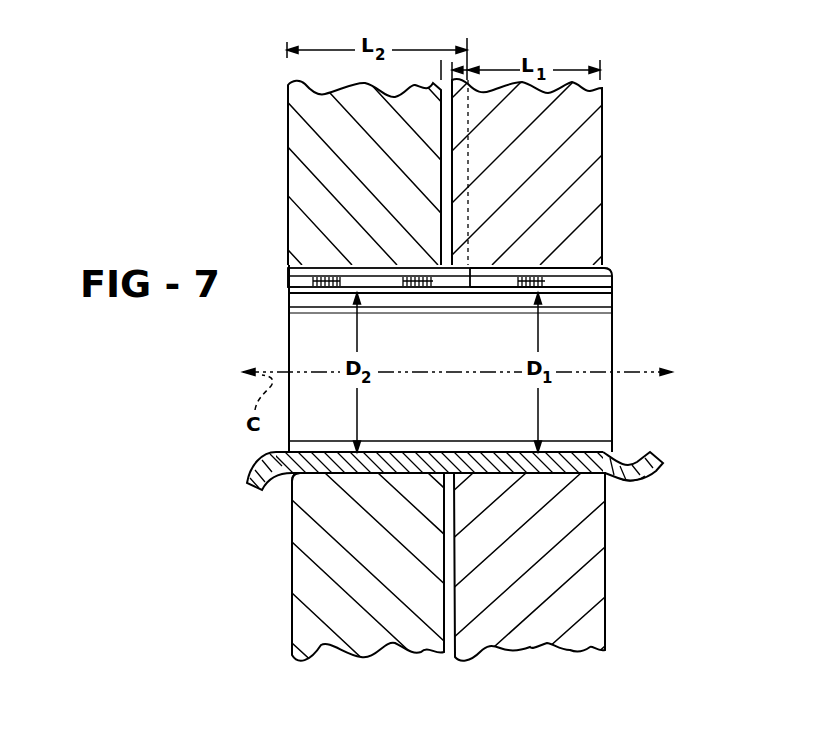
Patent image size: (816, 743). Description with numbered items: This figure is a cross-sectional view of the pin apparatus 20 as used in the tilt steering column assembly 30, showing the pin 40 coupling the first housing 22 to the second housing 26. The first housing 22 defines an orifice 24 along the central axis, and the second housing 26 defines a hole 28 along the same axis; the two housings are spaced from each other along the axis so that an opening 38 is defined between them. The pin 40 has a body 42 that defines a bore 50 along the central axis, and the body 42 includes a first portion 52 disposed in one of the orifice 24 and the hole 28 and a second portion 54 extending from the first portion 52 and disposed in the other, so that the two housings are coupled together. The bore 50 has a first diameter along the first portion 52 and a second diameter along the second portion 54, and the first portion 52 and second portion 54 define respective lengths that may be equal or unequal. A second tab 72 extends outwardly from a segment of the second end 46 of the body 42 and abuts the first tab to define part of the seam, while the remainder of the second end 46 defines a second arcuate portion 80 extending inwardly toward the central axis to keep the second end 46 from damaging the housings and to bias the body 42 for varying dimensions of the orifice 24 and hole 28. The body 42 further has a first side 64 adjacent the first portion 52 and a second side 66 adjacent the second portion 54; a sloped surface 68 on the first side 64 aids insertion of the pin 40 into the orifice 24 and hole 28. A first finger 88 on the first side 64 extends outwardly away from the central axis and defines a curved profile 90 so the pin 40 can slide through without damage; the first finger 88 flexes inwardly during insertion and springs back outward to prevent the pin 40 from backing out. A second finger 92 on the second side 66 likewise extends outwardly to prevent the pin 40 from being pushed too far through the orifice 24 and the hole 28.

The pin apparatus 20 is at (692, 279).
The first housing 22 is at (593, 623).
The orifice 24 is at (505, 477).
The second housing 26 is at (307, 615).
The hole 28 is at (318, 475).
The tilt steering column assembly 30 is at (196, 193).
The opening 38 is at (430, 70).
The pin 40 is at (471, 486).
The body 42 is at (412, 465).
The second end 46 is at (288, 279).
The bore 50 is at (578, 390).
The first portion 52 is at (529, 256).
The second portion 54 is at (363, 256).
The first side 64 is at (612, 293).
The second side 66 is at (288, 302).
The sloped surface 68 is at (608, 267).
The second tab 72 is at (566, 273).
The second arcuate portion 80 is at (328, 272).
The first finger 88 is at (653, 457).
The curved profile 90 is at (630, 478).
The second finger 92 is at (263, 487).